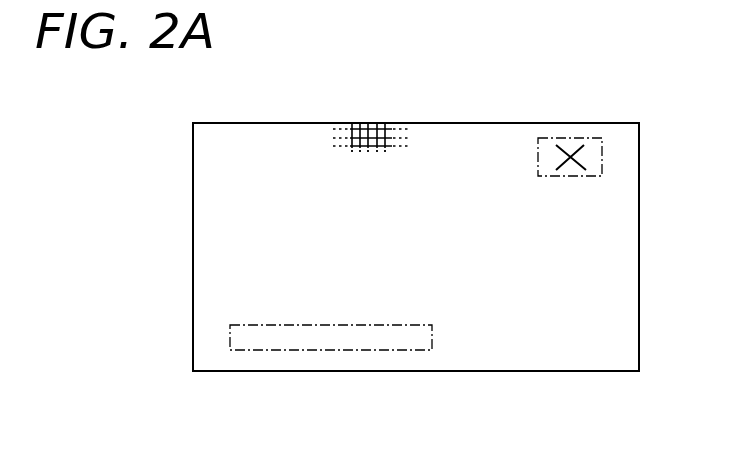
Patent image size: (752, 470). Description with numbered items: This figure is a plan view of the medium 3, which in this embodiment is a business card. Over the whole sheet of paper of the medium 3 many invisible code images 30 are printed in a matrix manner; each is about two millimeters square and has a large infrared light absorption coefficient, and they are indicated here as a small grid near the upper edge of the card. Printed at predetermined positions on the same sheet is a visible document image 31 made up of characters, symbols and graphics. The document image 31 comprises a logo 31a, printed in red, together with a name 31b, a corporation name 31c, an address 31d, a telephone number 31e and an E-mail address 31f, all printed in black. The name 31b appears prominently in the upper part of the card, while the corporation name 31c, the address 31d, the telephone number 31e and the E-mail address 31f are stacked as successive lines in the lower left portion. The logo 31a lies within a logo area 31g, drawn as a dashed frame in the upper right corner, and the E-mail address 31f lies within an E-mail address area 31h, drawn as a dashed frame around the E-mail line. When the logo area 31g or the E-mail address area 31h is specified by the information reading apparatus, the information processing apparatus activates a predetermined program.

The medium 3 is at (490, 102).
The invisible code images 30 is at (373, 124).
The document image 31 is at (432, 313).
The logo 31a is at (571, 143).
The name 31b is at (305, 205).
The corporation name 31c is at (228, 268).
The address 31d is at (228, 292).
The telephone number 31e is at (228, 314).
The E-mail address 31f is at (229, 342).
The logo area 31g is at (602, 158).
The E-mail address area 31h is at (287, 350).